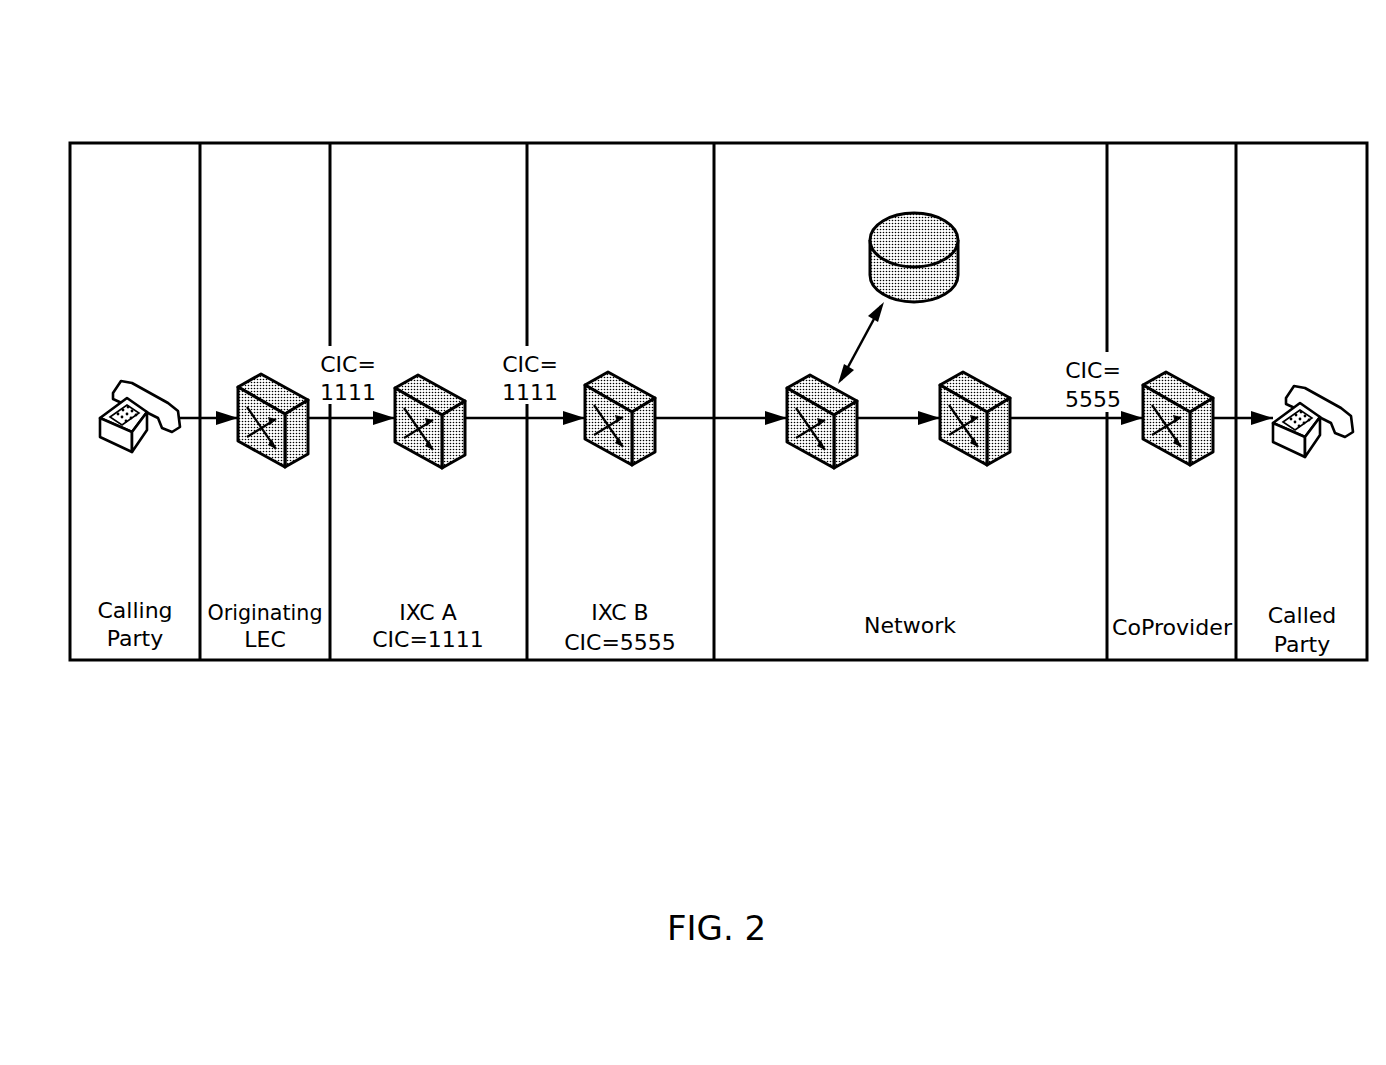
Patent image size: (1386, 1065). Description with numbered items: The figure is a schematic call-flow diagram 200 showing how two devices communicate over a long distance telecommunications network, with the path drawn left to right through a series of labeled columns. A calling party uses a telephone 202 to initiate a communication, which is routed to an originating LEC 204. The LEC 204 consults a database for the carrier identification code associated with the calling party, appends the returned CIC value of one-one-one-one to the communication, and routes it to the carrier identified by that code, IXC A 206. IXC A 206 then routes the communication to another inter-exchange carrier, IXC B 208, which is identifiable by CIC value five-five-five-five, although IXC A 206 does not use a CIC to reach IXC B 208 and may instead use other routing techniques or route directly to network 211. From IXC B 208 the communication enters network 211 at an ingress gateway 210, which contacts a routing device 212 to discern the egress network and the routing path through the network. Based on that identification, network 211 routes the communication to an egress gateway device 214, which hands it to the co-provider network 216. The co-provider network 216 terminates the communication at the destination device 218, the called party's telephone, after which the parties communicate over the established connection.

The call-flow diagram 200 is at (184, 94).
The telephone 202 is at (131, 383).
The originating LEC 204 is at (268, 378).
The IXC A 206 is at (420, 379).
The IXC B 208 is at (612, 376).
The ingress gateway 210 is at (815, 378).
The network 211 is at (1078, 170).
The routing device 212 is at (870, 243).
The egress gateway device 214 is at (960, 379).
The co-provider network 216 is at (1166, 380).
The destination device 218 is at (1307, 393).